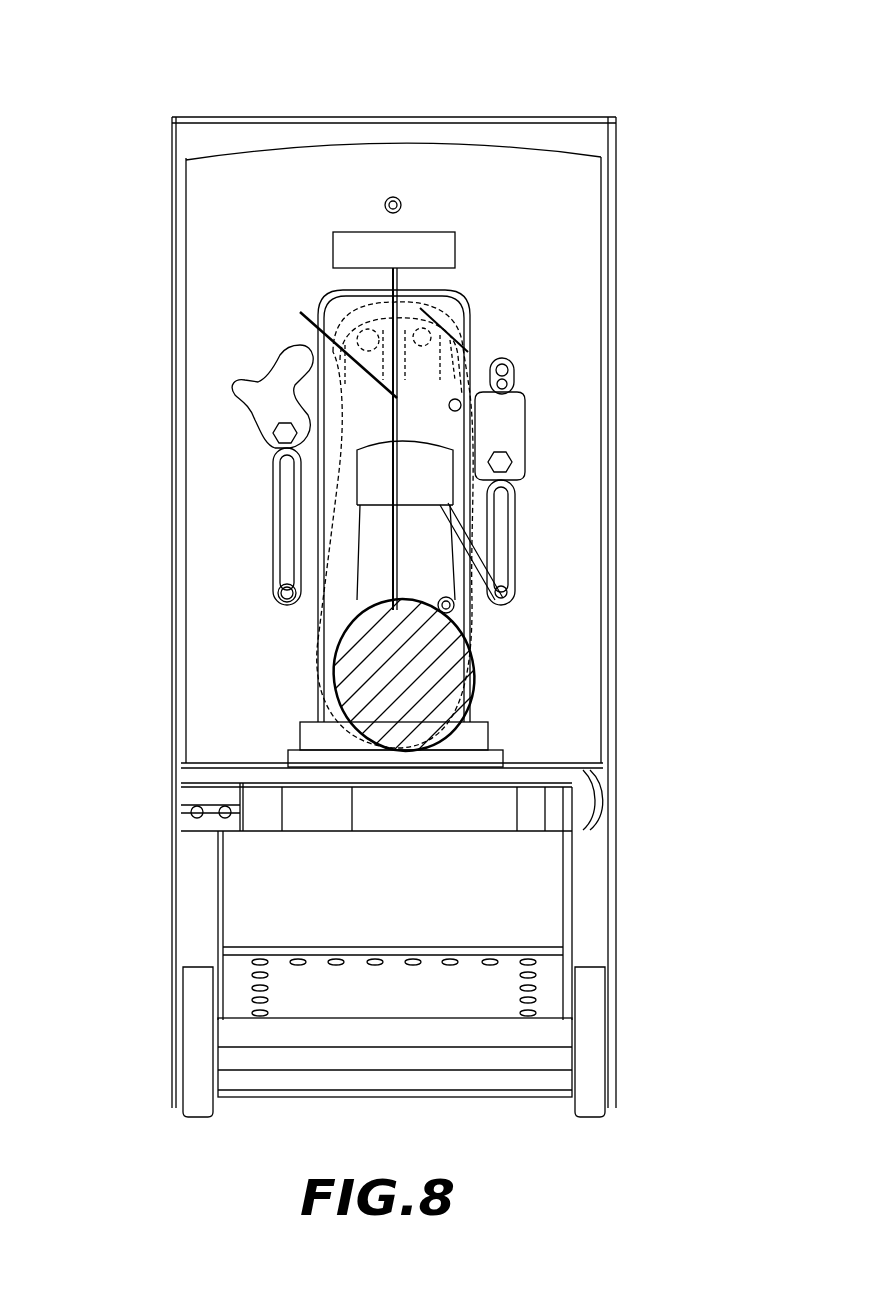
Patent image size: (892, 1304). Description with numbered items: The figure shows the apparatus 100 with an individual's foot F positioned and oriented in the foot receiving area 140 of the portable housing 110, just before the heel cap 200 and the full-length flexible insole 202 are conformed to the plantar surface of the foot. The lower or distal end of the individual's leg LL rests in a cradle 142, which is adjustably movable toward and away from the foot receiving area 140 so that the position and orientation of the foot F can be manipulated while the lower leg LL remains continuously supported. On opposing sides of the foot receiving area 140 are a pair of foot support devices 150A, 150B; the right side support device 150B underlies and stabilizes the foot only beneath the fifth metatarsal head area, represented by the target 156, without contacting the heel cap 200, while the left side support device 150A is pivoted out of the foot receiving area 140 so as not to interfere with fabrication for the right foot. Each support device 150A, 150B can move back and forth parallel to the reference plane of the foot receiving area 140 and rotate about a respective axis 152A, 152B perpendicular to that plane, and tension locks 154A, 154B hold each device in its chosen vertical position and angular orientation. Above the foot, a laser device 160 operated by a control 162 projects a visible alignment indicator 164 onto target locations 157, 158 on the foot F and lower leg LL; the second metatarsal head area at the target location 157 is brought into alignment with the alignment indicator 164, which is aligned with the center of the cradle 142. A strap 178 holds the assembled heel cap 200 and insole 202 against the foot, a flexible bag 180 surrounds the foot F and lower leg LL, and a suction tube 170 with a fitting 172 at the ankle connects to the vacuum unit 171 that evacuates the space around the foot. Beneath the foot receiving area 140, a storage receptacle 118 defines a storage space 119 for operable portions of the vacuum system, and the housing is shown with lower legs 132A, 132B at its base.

The apparatus 100 is at (726, 66).
The portable housing 110 is at (567, 188).
The control 162 is at (401, 202).
The laser device 160 is at (440, 250).
The alignment indicator 164 is at (348, 293).
The full-length flexible insole 202 is at (470, 302).
The flexible bag 180 is at (468, 318).
The target 156 is at (462, 398).
The target location 157 is at (325, 320).
The left side support device 150A is at (250, 400).
The right side support device 150B is at (515, 412).
The tension lock 154A is at (290, 438).
The tension lock 154B is at (512, 462).
The axis 152A is at (282, 490).
The axis 152B is at (505, 540).
The foot F is at (385, 568).
The target location 158 is at (340, 578).
The heel cap 200 is at (503, 512).
The strap 178 is at (470, 570).
The suction tube 170 is at (462, 605).
The fitting 172 is at (467, 615).
The foot receiving area 140 is at (325, 625).
The lower leg LL is at (350, 670).
The cradle 142 is at (470, 706).
The vacuum unit 171 is at (465, 810).
The storage space 119 is at (378, 985).
The storage receptacle 118 is at (455, 1060).
The left leg 132A is at (195, 1112).
The right leg 132B is at (598, 1112).